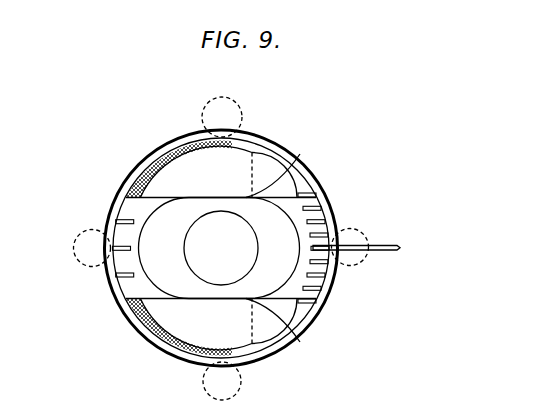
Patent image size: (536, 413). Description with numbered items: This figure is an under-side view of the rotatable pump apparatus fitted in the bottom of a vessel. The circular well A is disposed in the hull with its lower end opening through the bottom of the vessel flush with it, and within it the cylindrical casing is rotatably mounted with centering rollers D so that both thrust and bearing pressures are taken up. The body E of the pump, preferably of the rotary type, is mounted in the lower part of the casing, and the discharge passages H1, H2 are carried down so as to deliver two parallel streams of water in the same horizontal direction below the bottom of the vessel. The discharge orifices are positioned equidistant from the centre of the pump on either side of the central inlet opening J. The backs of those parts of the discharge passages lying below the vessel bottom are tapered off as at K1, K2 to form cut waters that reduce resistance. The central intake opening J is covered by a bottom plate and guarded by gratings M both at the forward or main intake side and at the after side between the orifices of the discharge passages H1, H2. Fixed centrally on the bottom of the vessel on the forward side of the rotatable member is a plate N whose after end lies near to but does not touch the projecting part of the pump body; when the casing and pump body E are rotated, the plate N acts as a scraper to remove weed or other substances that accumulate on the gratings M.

The well A is at (316, 170).
The pump body E is at (122, 205).
The inlet opening J is at (158, 277).
The discharge passage H1 is at (153, 162).
The discharge passage H2 is at (158, 333).
The cut water K1 is at (270, 170).
The cut water K2 is at (266, 328).
The gratings M is at (318, 220).
The plate N is at (376, 253).
The centering rollers D is at (241, 107).